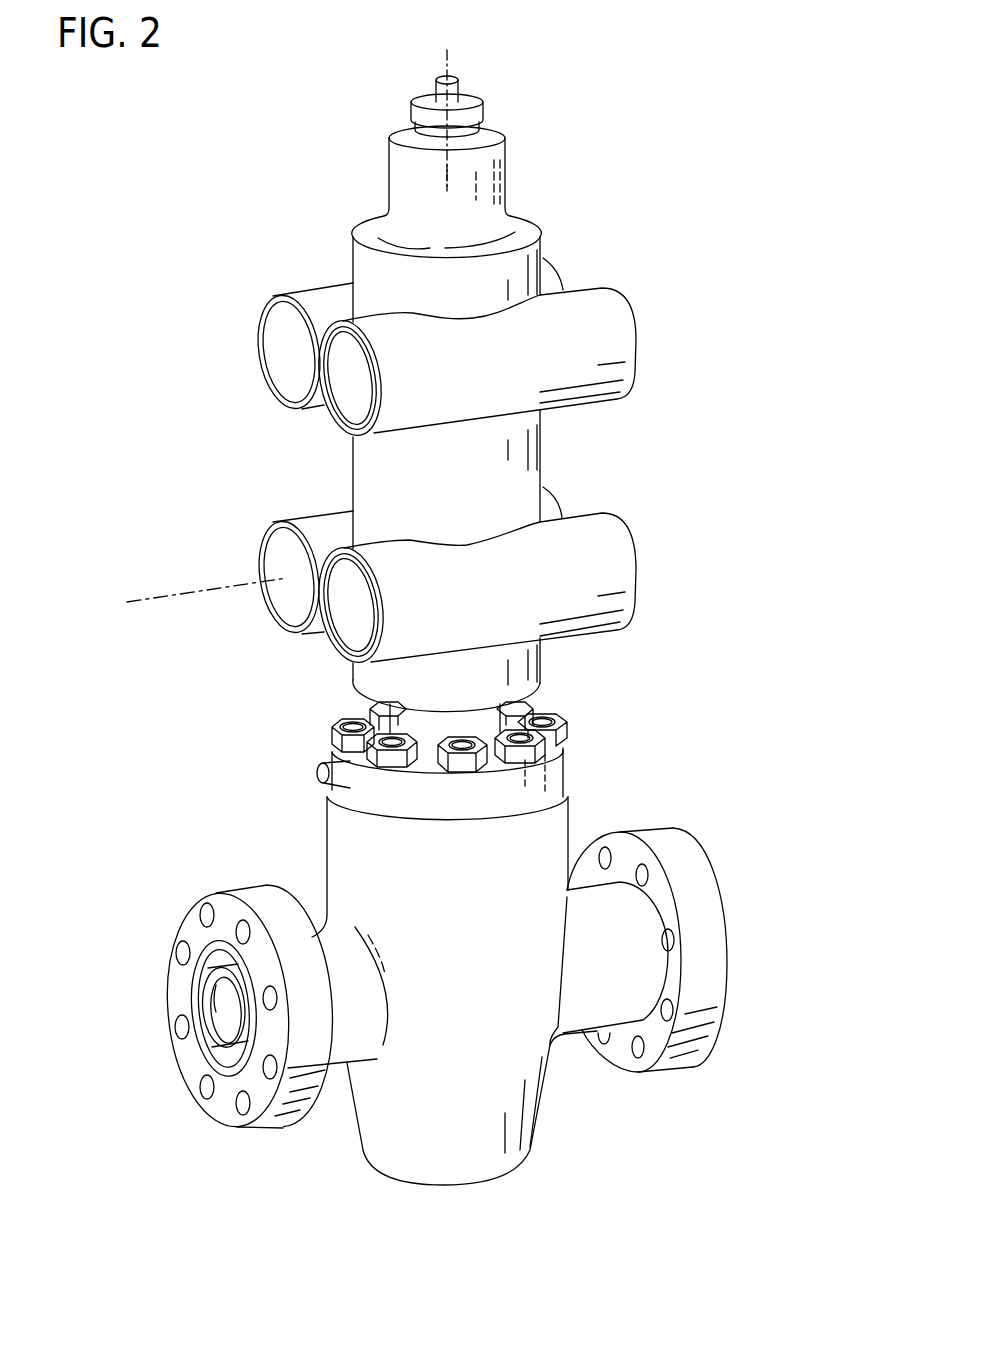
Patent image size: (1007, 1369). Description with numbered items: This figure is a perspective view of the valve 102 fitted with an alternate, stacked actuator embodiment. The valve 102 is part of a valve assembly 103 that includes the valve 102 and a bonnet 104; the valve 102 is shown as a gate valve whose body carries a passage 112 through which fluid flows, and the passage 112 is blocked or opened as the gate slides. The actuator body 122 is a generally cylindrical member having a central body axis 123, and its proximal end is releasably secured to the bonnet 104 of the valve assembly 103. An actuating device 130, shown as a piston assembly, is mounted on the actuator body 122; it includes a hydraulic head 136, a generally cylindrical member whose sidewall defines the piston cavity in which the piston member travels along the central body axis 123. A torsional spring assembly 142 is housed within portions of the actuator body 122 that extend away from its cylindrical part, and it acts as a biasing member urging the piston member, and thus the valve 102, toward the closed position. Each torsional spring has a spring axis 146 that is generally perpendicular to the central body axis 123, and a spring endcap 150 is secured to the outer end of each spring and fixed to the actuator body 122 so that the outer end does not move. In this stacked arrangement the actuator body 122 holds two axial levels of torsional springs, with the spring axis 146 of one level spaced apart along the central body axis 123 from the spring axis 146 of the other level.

The valve 102 is at (340, 840).
The valve assembly 103 is at (453, 914).
The bonnet 104 is at (563, 762).
The passage 112 is at (205, 957).
The actuator body 122 is at (545, 428).
The central body axis 123 is at (448, 68).
The actuating device 130 is at (398, 389).
The hydraulic head 136 is at (403, 180).
The torsional spring assembly 142 is at (383, 373).
The spring axis 146 is at (208, 587).
The spring endcap 150 is at (350, 403).